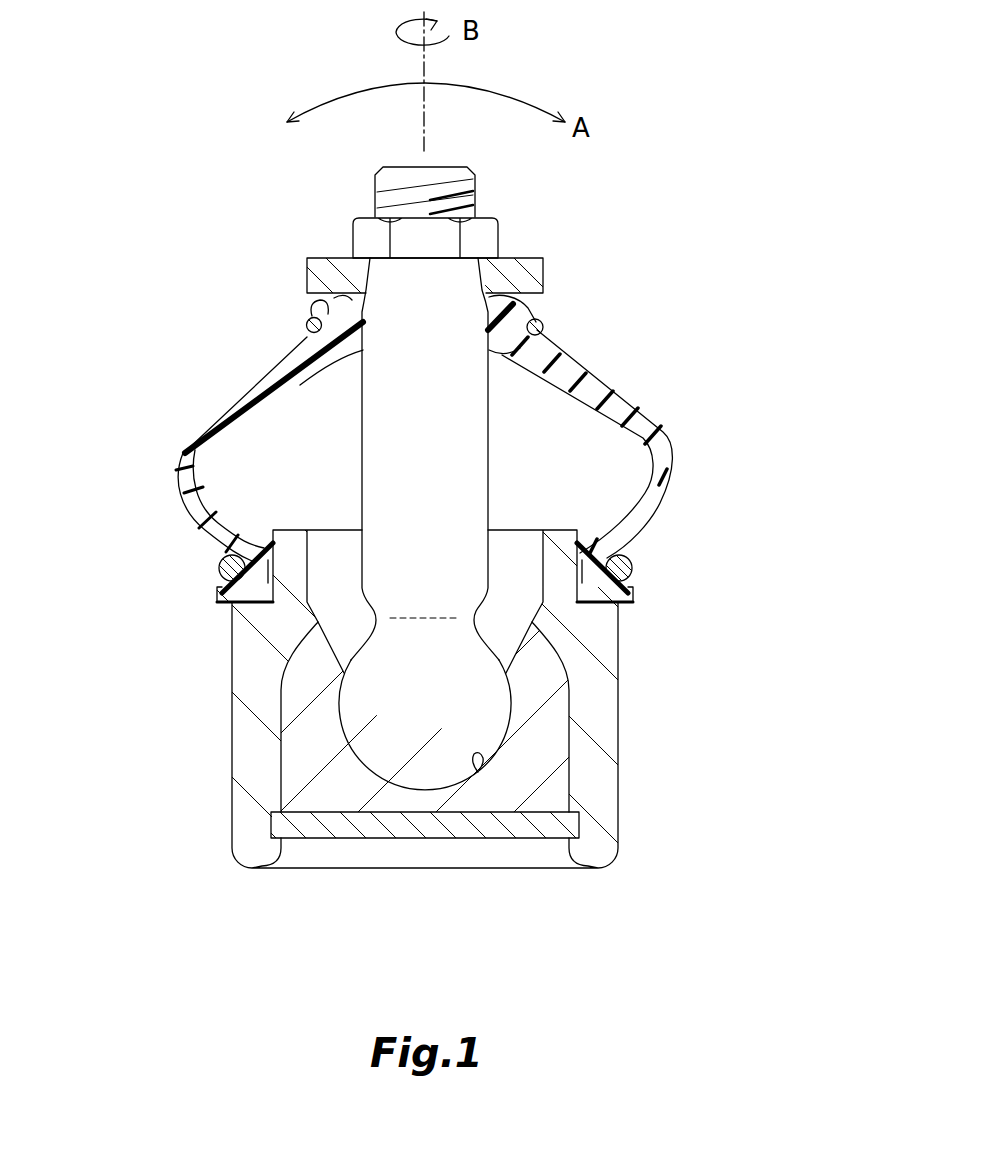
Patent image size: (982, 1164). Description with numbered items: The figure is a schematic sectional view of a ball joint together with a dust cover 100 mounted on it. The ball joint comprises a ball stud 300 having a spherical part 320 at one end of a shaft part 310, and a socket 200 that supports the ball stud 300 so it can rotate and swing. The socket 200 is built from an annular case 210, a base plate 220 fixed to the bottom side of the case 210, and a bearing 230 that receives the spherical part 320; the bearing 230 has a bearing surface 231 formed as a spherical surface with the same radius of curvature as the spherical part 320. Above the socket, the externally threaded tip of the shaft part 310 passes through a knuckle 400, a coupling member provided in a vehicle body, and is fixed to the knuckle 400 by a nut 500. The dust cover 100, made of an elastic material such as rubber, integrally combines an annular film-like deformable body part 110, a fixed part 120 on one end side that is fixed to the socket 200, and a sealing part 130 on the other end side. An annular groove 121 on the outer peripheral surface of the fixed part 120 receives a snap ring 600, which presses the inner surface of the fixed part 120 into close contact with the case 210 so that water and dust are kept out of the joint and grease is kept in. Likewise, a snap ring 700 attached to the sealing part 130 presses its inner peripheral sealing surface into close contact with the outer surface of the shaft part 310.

The dust cover 100 is at (445, 459).
The body part 110 is at (623, 405).
The fixed part 120 is at (214, 617).
The annular groove 121 is at (218, 566).
The sealing part 130 is at (290, 306).
The socket 200 is at (445, 735).
The case 210 is at (608, 768).
The base plate 220 is at (454, 832).
The bearing 230 is at (343, 795).
The bearing surface 231 is at (478, 772).
The ball stud 300 is at (460, 488).
The shaft part 310 is at (373, 441).
The spherical part 320 is at (357, 717).
The knuckle 400 is at (543, 274).
The nut 500 is at (362, 243).
The snap ring 600 is at (631, 570).
The snap ring 700 is at (542, 327).